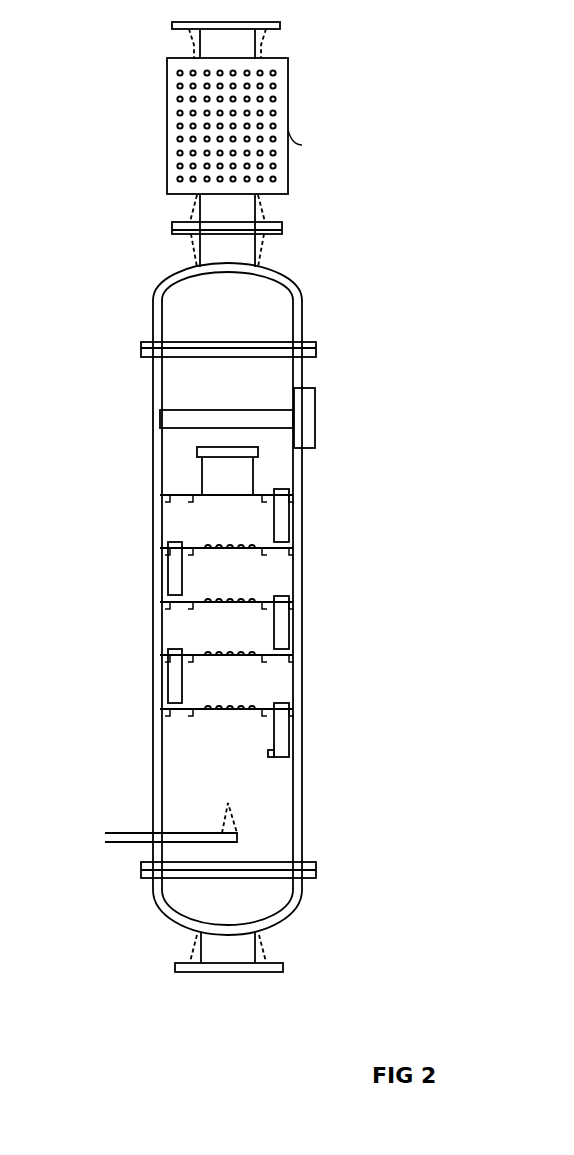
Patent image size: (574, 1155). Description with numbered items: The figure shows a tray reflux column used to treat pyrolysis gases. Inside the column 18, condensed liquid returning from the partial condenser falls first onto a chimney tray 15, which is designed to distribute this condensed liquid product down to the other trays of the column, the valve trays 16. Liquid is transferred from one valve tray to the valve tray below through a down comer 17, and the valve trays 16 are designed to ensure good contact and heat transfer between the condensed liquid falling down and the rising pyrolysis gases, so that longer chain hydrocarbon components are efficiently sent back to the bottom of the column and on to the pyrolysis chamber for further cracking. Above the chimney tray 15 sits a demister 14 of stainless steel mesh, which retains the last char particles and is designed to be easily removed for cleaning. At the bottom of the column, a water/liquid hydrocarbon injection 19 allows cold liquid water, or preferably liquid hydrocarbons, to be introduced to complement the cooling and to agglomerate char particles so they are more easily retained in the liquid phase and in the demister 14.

The demister 14 is at (160, 420).
The chimney tray 15 is at (194, 494).
The valve trays 16 is at (253, 545).
The down comer 17 is at (178, 666).
The column 18 is at (302, 697).
The water/liquid hydrocarbon injection 19 is at (106, 830).